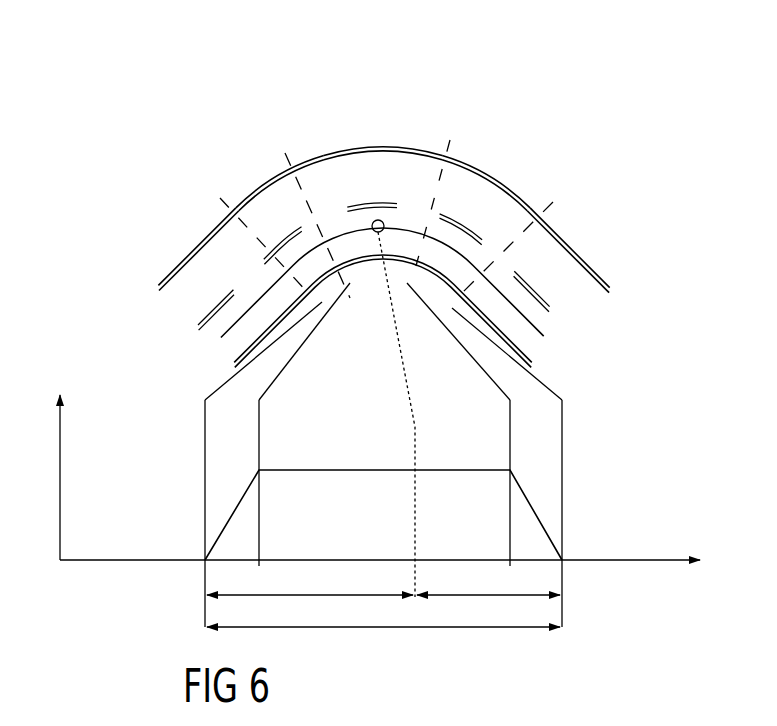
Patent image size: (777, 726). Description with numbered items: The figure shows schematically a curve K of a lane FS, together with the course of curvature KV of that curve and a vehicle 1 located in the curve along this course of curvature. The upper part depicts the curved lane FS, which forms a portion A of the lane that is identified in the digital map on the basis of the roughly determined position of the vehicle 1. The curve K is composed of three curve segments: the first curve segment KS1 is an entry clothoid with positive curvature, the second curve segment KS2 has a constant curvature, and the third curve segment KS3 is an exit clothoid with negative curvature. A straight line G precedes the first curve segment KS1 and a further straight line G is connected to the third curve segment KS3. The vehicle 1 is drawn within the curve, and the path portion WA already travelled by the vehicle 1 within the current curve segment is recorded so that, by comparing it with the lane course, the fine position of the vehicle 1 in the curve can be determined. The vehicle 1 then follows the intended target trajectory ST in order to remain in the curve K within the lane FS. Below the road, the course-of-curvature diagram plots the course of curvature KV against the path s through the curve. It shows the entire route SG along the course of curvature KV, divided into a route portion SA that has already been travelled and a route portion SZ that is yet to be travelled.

The vehicle 1 is at (378, 220).
The portion of the lane A is at (413, 125).
The straight line G is at (148, 253).
The first curve segment KS1 is at (247, 170).
The second curve segment KS2 is at (348, 128).
The third curve segment KS3 is at (517, 158).
The path portion travelled by the vehicle WA is at (317, 244).
The target trajectory ST is at (553, 323).
The lane FS is at (540, 348).
The curve K is at (378, 297).
The course of curvature KV is at (292, 504).
The path s is at (392, 568).
The route portion already travelled SA is at (310, 583).
The route portion yet to be travelled SZ is at (488, 583).
The entire route SG is at (383, 648).